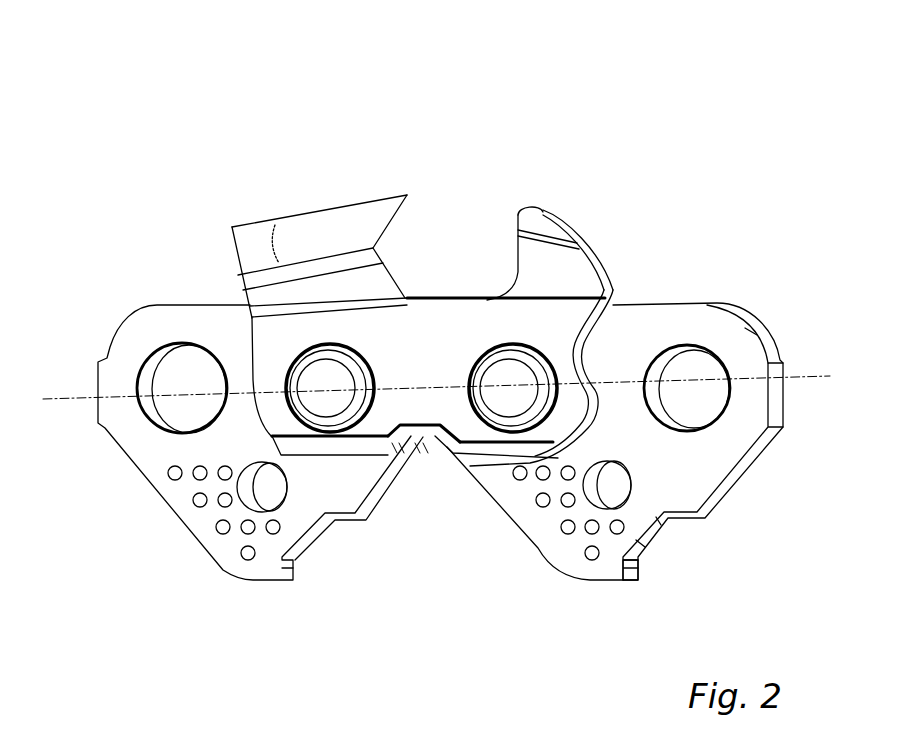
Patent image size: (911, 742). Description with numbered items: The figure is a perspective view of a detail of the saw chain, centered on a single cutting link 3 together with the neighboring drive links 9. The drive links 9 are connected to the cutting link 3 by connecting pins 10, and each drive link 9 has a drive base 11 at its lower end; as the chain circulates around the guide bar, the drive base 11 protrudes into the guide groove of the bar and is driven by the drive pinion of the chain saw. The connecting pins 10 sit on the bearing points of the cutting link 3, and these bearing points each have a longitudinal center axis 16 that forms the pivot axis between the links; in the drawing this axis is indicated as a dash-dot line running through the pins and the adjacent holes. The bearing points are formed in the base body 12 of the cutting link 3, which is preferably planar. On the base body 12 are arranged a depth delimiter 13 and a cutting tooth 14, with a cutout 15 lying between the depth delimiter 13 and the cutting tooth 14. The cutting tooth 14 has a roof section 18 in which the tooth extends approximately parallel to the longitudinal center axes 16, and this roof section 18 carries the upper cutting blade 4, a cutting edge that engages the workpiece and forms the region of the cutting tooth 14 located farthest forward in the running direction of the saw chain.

The cutting link 3 is at (433, 424).
The upper cutting blade 4 is at (410, 187).
The drive link 9 is at (262, 566).
The connecting pin 10 is at (342, 407).
The drive base 11 is at (637, 580).
The base body 12 is at (470, 320).
The depth delimiter 13 is at (547, 227).
The cutting tooth 14 is at (358, 218).
The cutout 15 is at (463, 202).
The longitudinal center axis 16 is at (72, 397).
The roof section 18 is at (297, 212).